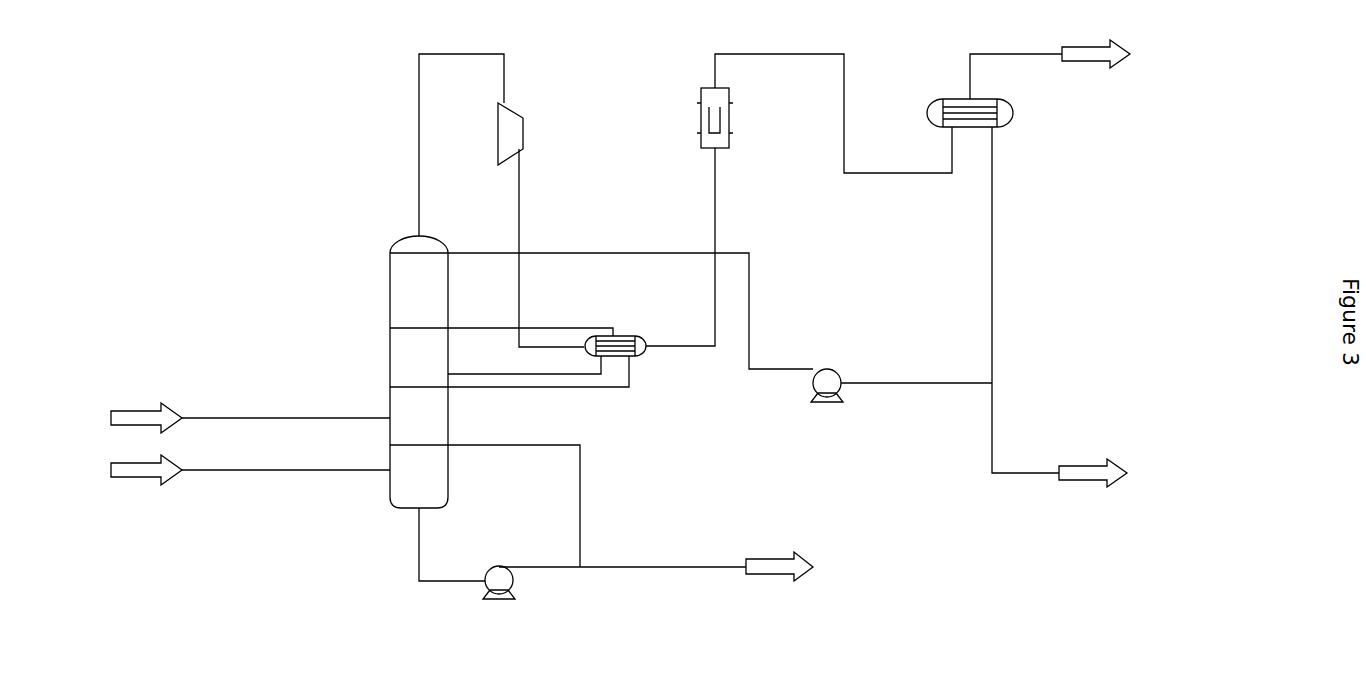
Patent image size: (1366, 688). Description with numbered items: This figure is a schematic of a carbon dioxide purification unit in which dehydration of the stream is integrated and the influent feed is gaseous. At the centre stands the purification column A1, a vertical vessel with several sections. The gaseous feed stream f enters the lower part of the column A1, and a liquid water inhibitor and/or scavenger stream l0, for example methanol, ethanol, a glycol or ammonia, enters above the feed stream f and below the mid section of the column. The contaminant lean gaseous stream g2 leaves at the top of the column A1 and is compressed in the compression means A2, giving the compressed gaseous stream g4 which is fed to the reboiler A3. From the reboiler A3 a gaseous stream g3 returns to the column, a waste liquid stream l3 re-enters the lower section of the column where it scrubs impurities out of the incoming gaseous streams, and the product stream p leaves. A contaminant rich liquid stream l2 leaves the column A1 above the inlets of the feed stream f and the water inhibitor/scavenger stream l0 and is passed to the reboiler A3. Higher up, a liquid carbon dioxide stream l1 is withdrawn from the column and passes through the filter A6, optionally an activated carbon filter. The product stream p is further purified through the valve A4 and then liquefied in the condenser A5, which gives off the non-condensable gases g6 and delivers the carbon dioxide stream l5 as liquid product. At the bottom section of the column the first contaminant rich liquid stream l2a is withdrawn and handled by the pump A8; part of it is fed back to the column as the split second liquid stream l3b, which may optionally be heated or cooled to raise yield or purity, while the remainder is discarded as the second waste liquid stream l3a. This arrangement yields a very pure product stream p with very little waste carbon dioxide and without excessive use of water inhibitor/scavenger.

The purification column A1 is at (419, 372).
The compression means A2 is at (510, 134).
The reboiler A3 is at (615, 339).
The valve A4 is at (824, 113).
The condenser A5 is at (970, 113).
The filter A6 is at (901, 385).
The pump A8 is at (499, 582).
The contaminant lean gaseous stream g2 is at (461, 145).
The gaseous stream g3 is at (530, 326).
The compressed gaseous stream g4 is at (551, 248).
The non-condensable gases g6 is at (1050, 69).
The water inhibitor and/or scavenger stream l0 is at (250, 418).
The liquid carbon dioxide stream l1 is at (630, 300).
The contaminant rich liquid stream l2 is at (524, 365).
The first contaminant rich liquid stream l2a is at (452, 544).
The waste liquid stream l3 is at (545, 371).
The second waste liquid stream l3a is at (656, 566).
The split second liquid stream l3b is at (514, 496).
The carbon dioxide stream l5 is at (1059, 307).
The feed stream f is at (250, 470).
The product stream p is at (680, 247).